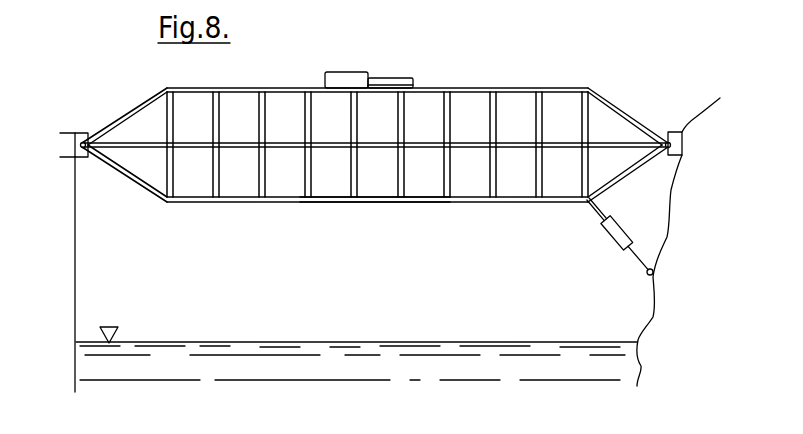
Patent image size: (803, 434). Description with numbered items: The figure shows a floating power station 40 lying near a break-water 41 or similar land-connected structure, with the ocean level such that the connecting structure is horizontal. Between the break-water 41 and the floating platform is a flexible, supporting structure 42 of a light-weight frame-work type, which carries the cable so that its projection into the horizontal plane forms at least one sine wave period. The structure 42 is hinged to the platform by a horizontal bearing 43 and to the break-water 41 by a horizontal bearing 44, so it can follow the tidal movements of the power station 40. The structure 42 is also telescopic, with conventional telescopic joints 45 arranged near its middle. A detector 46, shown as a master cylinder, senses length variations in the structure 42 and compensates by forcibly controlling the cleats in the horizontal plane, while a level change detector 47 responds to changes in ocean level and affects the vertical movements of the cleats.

The power station 40 is at (55, 222).
The break-water 41 is at (707, 216).
The flexible supporting structure 42 is at (222, 88).
The horizontal bearing 43 is at (82, 136).
The horizontal bearing 44 is at (668, 131).
The telescopic joints 45 is at (370, 203).
The detector 46 is at (350, 74).
The level change detector 47 is at (603, 232).